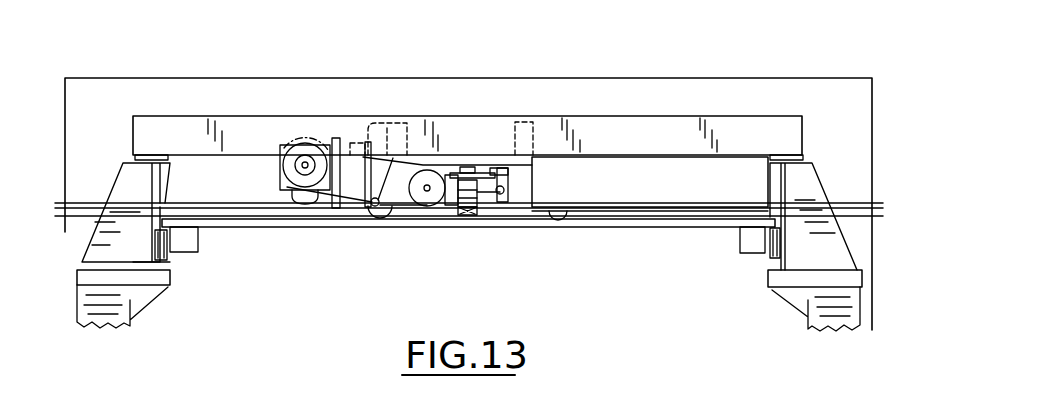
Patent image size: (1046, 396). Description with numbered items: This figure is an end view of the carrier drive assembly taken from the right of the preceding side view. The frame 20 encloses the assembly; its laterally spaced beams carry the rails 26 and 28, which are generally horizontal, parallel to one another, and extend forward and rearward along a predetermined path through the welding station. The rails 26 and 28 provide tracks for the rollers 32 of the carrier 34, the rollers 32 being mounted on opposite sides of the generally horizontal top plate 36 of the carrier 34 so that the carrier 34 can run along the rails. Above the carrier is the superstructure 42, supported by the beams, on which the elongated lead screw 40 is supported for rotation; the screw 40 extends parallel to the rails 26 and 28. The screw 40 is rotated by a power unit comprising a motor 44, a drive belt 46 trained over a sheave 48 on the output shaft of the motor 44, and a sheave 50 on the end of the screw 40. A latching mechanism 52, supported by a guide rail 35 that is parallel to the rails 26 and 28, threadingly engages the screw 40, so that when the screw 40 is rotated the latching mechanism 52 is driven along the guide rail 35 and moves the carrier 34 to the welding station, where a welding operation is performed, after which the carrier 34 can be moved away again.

The frame 20 is at (727, 92).
The superstructure 42 is at (265, 125).
The sheave 48 is at (295, 143).
The motor 44 is at (303, 157).
The sheave 50 is at (415, 175).
The guide rail 35 is at (467, 167).
The rollers 32 is at (155, 245).
The rail 26 is at (165, 260).
The carrier 34 is at (256, 228).
The drive belt 46 is at (362, 198).
The lead screw 40 is at (433, 198).
The latching mechanism 52 is at (487, 207).
The top plate 36 is at (662, 227).
The rail 28 is at (772, 263).